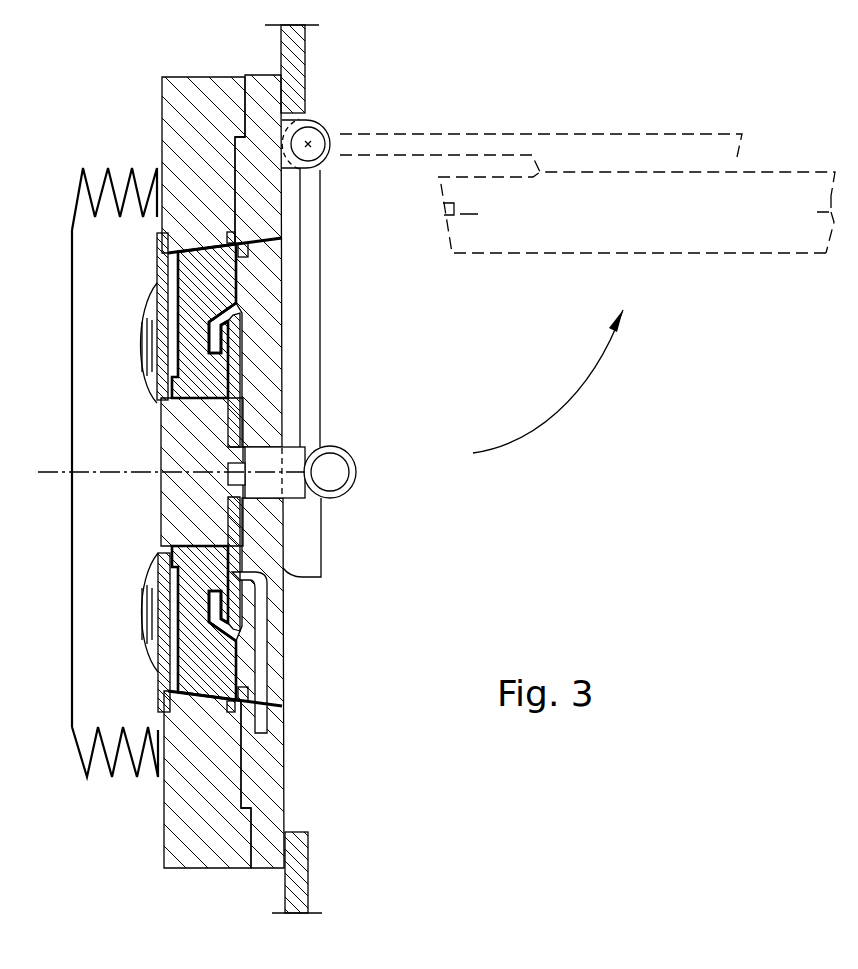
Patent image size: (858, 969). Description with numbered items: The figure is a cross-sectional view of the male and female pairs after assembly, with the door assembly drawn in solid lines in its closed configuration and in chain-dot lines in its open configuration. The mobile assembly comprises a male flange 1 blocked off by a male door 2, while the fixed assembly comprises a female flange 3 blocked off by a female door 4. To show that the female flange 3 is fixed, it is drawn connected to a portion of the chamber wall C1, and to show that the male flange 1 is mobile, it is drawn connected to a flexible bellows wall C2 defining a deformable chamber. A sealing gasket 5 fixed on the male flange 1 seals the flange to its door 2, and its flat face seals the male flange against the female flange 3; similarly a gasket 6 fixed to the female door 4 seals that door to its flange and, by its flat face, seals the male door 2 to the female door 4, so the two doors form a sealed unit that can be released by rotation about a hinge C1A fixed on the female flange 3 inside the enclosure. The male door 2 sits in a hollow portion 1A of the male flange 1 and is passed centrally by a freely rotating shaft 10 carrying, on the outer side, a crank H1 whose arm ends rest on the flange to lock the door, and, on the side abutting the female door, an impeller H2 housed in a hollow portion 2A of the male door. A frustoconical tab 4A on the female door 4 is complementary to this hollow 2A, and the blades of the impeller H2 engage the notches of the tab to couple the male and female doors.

The male flange 1 is at (215, 95).
The hollow portion of the male flange 1A is at (242, 133).
The male door 2 is at (203, 272).
The hollow portion of the male door 2A is at (208, 300).
The female flange 3 is at (262, 98).
The female door 4 is at (262, 290).
The frustoconical tab 4A is at (230, 318).
The sealing gasket 5 is at (229, 232).
The gasket 6 is at (257, 250).
The shaft 10 is at (183, 492).
The chamber wall C1 is at (296, 62).
The hinge C1A is at (314, 133).
The bellows C2 is at (97, 178).
The crank H1 is at (157, 250).
The impeller H2 is at (237, 362).